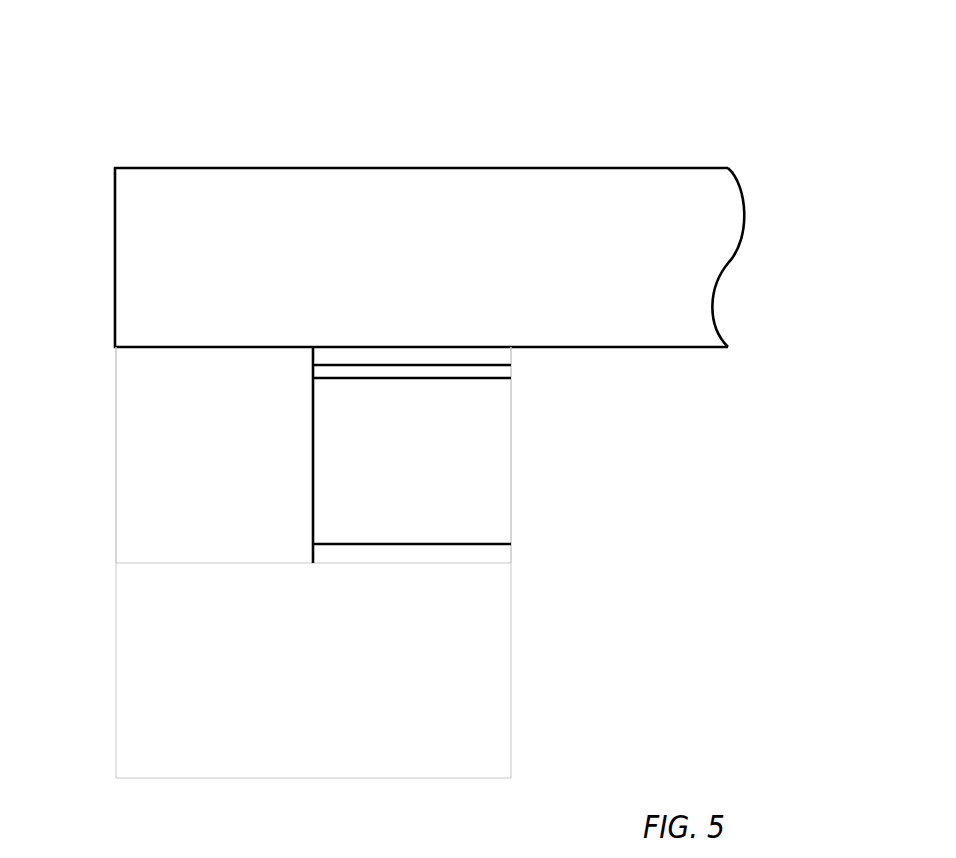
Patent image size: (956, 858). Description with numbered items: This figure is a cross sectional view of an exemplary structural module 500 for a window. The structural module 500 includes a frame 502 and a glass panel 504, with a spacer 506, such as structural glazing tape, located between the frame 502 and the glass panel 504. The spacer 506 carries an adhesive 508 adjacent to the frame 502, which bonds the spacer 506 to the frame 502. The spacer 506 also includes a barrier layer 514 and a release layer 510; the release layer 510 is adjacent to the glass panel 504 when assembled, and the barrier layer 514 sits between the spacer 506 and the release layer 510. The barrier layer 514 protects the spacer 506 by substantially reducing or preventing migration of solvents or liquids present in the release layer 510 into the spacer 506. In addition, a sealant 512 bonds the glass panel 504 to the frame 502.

The structural module 500 is at (622, 79).
The frame 502 is at (449, 700).
The glass panel 504 is at (335, 205).
The spacer 506 is at (452, 466).
The adhesive 508 is at (445, 553).
The release layer 510 is at (433, 355).
The sealant 512 is at (205, 430).
The barrier layer 514 is at (424, 372).